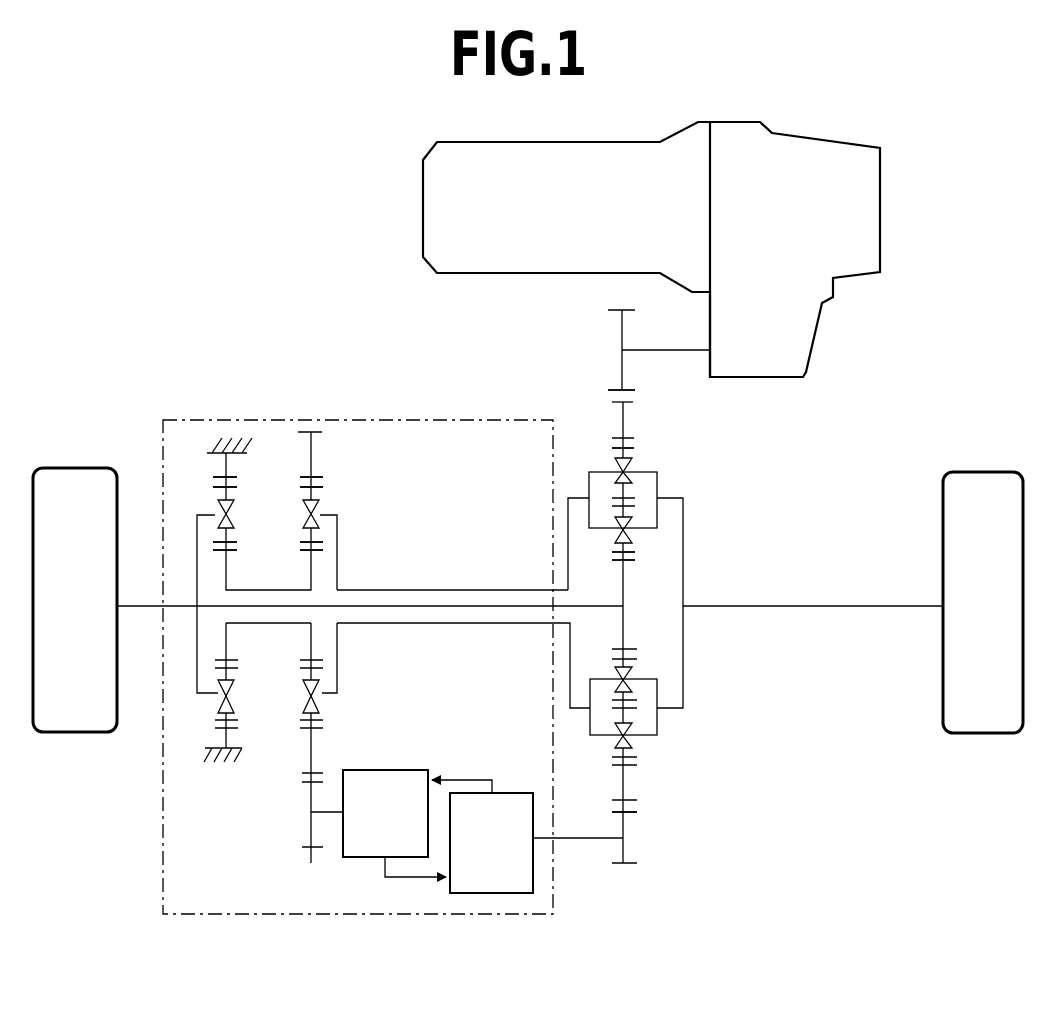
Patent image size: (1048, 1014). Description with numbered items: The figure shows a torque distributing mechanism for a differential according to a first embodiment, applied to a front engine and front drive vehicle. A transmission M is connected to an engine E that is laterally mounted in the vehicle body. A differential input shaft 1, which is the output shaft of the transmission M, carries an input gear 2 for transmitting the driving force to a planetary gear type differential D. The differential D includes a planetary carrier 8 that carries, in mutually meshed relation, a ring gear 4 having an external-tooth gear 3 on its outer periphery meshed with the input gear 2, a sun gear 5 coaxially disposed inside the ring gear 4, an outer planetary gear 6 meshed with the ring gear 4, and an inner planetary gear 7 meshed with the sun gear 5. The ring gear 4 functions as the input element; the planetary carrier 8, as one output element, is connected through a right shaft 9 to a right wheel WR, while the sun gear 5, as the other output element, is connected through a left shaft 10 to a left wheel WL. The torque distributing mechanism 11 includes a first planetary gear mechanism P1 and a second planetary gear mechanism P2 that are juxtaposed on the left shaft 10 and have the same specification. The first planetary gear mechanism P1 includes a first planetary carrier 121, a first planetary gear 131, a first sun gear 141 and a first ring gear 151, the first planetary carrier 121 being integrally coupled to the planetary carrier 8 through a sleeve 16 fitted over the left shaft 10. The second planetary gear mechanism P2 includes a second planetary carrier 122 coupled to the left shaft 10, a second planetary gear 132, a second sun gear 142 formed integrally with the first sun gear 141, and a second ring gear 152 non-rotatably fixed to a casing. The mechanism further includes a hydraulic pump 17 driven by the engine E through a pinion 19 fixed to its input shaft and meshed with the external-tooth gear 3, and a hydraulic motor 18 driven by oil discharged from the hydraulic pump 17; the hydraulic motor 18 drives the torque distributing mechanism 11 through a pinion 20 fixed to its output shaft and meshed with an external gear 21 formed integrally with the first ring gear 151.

The differential input shaft 1 is at (658, 348).
The input gear 2 is at (630, 388).
The external-tooth gear 3 is at (610, 398).
The ring gear 4 is at (633, 435).
The sun gear 5 is at (628, 562).
The outer planetary gear 6 is at (617, 447).
The inner planetary gear 7 is at (635, 552).
The planetary carrier 8 is at (683, 517).
The right shaft 9 is at (833, 603).
The left shaft 10 is at (135, 603).
The torque distributing mechanism 11 is at (398, 418).
The first planetary carrier 121 is at (342, 527).
The second planetary carrier 122 is at (197, 513).
The first planetary gear 131 is at (317, 487).
The second planetary gear 132 is at (235, 487).
The first sun gear 141 is at (303, 550).
The second sun gear 142 is at (232, 550).
The first ring gear 151 is at (318, 732).
The second ring gear 152 is at (235, 732).
The sleeve 16 is at (447, 590).
The hydraulic pump 17 is at (482, 836).
The hydraulic motor 18 is at (394, 823).
The pinion 19 is at (630, 813).
The pinion 20 is at (305, 847).
The external gear 21 is at (303, 777).
The engine E is at (525, 255).
The transmission M is at (853, 260).
The differential D is at (563, 660).
The first planetary gear mechanism P1 is at (337, 465).
The second planetary gear mechanism P2 is at (200, 485).
The left wheel WL is at (70, 477).
The right wheel WR is at (978, 482).